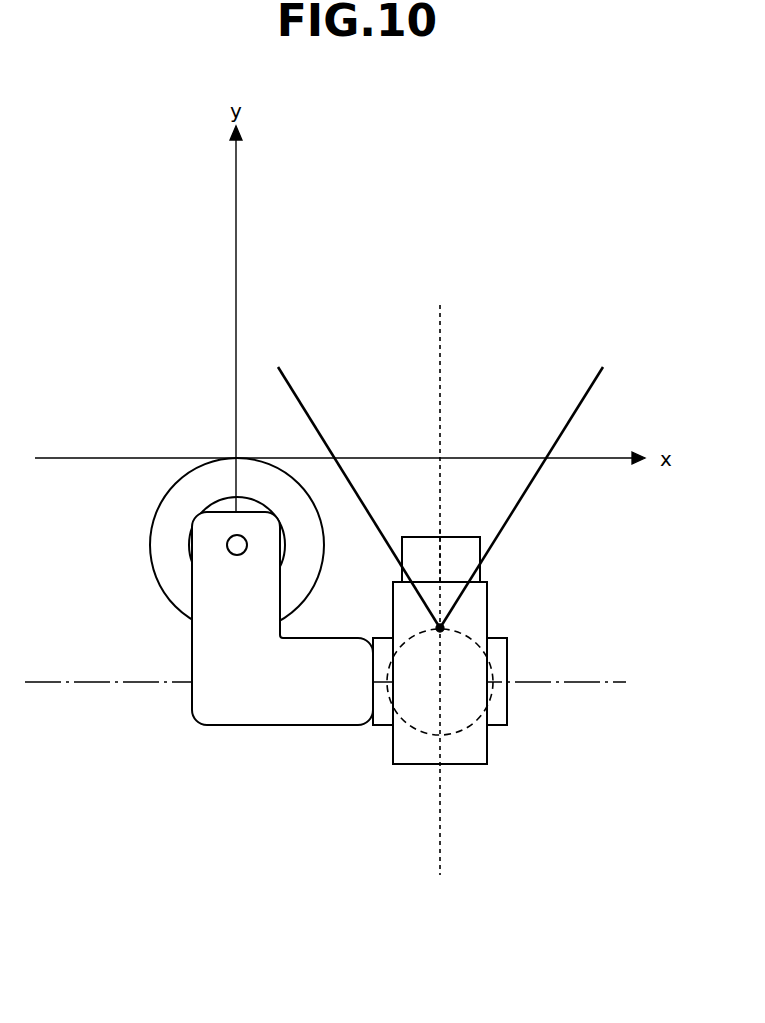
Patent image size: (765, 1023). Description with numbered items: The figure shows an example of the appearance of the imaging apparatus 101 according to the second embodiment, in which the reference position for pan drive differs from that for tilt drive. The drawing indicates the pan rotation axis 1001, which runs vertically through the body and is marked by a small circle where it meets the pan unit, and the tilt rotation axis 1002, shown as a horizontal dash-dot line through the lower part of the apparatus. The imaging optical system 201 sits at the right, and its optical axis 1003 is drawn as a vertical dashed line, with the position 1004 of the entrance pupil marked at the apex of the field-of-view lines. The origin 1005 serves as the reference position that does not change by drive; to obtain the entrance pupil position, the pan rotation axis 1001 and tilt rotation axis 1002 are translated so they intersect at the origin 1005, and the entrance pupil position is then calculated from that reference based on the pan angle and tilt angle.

The imaging apparatus 101 is at (332, 300).
The imaging optical system 201 is at (463, 550).
The pan rotation axis 1001 is at (227, 548).
The tilt rotation axis 1002 is at (102, 682).
The optical axis 1003 is at (441, 340).
The position of an entrance pupil 1004 is at (443, 628).
The origin 1005 is at (236, 458).